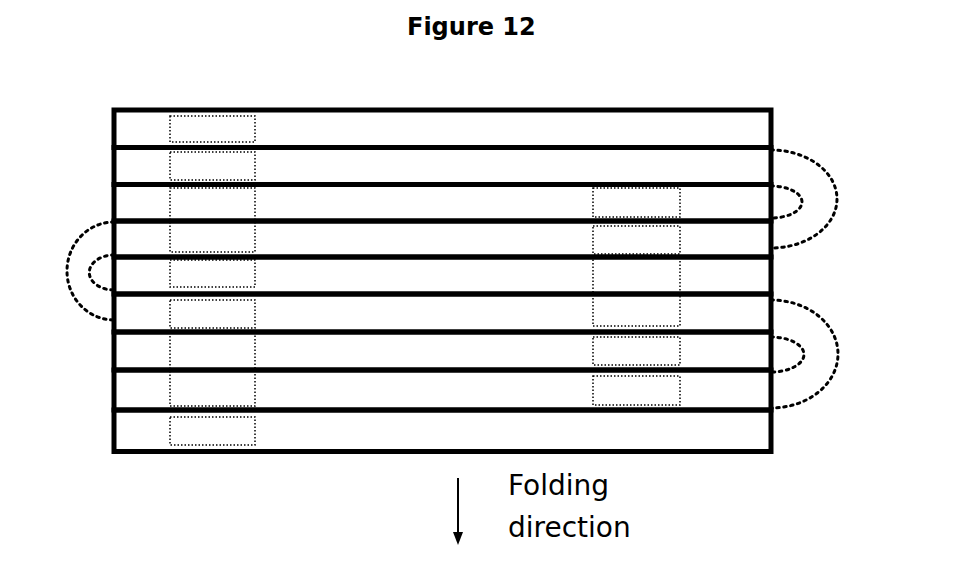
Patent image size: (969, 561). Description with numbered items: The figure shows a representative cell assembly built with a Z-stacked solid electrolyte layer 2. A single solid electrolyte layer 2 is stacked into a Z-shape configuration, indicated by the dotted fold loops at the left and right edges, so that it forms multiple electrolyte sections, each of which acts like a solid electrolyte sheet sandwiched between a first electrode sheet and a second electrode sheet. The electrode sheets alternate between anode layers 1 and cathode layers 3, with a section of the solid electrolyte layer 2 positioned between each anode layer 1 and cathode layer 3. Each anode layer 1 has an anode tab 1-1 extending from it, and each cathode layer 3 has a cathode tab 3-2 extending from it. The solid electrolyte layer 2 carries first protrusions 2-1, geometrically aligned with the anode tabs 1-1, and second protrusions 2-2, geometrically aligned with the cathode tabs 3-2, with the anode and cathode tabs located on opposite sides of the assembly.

The anode layer 1 is at (105, 135).
The solid electrolyte layer 2 is at (105, 167).
The cathode layer 3 is at (105, 199).
The anode tab 1-1 is at (212, 281).
The first protrusion 2-1 is at (212, 241).
The cathode tab 3-2 is at (636, 277).
The second protrusion 2-2 is at (636, 316).